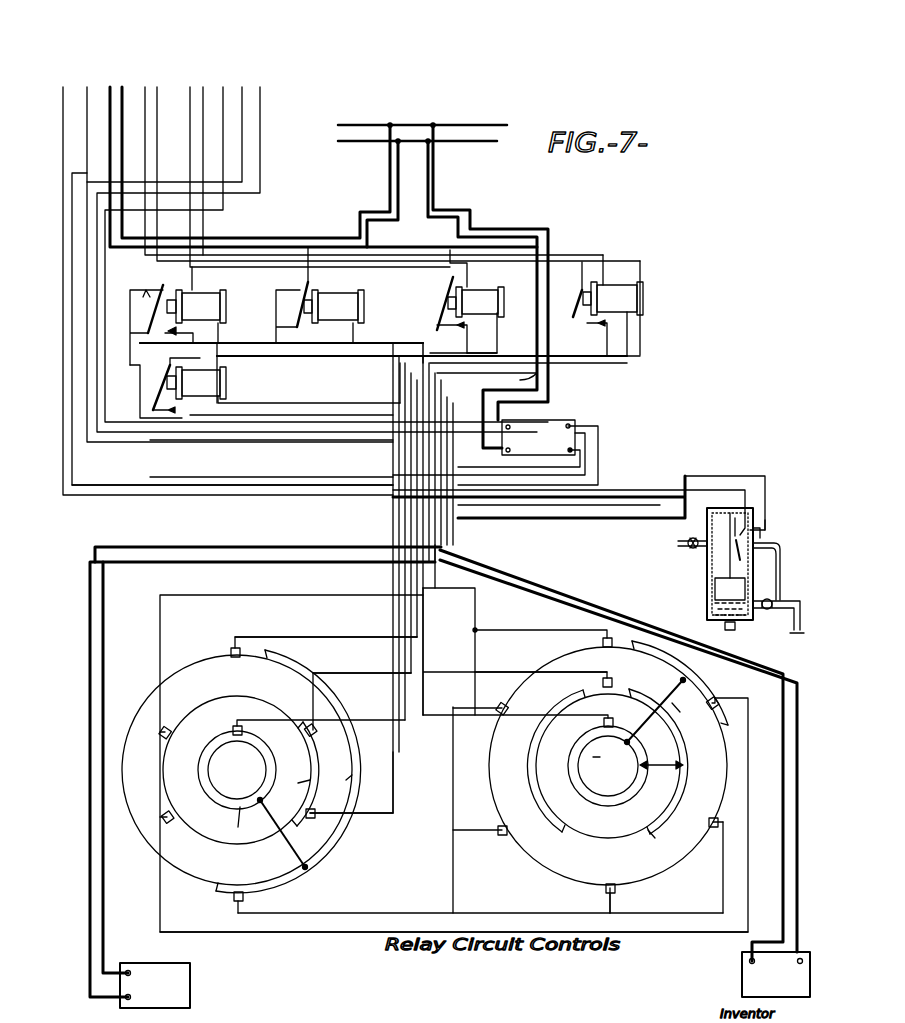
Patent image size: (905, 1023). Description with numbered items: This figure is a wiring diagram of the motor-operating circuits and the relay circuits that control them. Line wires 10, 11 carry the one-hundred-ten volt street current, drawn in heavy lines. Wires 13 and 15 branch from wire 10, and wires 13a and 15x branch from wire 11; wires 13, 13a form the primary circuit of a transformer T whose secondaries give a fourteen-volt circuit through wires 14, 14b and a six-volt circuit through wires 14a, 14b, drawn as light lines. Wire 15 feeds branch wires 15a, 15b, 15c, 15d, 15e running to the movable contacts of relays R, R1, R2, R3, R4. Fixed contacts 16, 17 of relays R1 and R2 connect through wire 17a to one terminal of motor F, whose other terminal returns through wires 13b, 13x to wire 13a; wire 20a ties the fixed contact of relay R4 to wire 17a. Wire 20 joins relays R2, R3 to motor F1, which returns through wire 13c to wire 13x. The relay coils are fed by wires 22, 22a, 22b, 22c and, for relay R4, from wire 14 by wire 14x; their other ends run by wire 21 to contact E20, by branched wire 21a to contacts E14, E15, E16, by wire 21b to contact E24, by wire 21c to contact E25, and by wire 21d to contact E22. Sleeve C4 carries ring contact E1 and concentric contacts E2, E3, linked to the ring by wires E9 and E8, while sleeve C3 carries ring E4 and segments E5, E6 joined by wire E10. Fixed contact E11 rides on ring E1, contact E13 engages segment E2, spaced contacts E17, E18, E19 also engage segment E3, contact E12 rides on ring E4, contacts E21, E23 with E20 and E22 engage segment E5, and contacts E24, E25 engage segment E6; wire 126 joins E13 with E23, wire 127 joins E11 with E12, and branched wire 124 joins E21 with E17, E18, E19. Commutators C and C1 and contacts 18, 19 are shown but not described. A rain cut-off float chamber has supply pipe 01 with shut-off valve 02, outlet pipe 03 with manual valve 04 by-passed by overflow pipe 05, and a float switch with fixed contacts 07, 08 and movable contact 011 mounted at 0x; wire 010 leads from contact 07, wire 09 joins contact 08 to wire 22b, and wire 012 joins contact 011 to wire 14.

The line wire 10 is at (372, 120).
The line wire 11 is at (480, 142).
The wire 13 is at (432, 178).
The wire 13a is at (436, 196).
The wire 13b is at (608, 570).
The wire 13c is at (166, 546).
The wire 13x is at (548, 388).
The wire 14 is at (62, 127).
The wire 14a is at (80, 90).
The wire 14b is at (390, 502).
The wire 14x is at (350, 415).
The wire 15 is at (110, 90).
The branch wire 15a is at (174, 316).
The branch wire 15b is at (302, 285).
The branch wire 15c is at (445, 280).
The branch wire 15d is at (582, 272).
The branch wire 15e is at (130, 328).
The wire 15x is at (122, 88).
The fixed contact 16 is at (184, 333).
The fixed contact 17 is at (334, 362).
The wire 17a is at (785, 900).
The contact 18 is at (457, 330).
The contact 19 is at (605, 347).
The wire 20 is at (430, 420).
The wire 20a is at (140, 400).
The wire 21 is at (254, 362).
The wire 21a is at (724, 898).
The wire 21b is at (495, 352).
The wire 21c is at (642, 350).
The wire 21d is at (393, 748).
The wire 22 is at (190, 118).
The wire 22a is at (215, 87).
The wire 22b is at (148, 88).
The wire 22c is at (190, 86).
The wire 09 is at (242, 88).
The wire 010 is at (262, 118).
The movable contact 011 is at (728, 525).
The wire 012 is at (262, 92).
The supply pipe 01 is at (678, 548).
The manual shut off valve 02 is at (700, 565).
The outlet pipe 03 is at (793, 642).
The manual valve 04 is at (770, 612).
The overflow pipe 05 is at (782, 575).
The fixed contact 07 is at (765, 498).
The fixed contact 08 is at (762, 534).
The mounting 0x is at (715, 580).
The relay R is at (196, 306).
The relay R1 is at (334, 306).
The relay R2 is at (476, 302).
The relay R3 is at (613, 298).
The relay R4 is at (196, 383).
The transformer T is at (575, 425).
The commutator C is at (237, 770).
The commutator C1 is at (608, 766).
The sleeve C3 is at (185, 700).
The sleeve C4 is at (548, 858).
The contact ring E1 is at (603, 754).
The contact E2 is at (659, 836).
The contact E3 is at (672, 672).
The ring-like contact E4 is at (243, 825).
The segmental contact E5 is at (296, 774).
The segmental contact E6 is at (358, 774).
The wire E8 is at (684, 712).
The wire E9 is at (662, 768).
The wire E10 is at (292, 855).
The fixed contact E11 is at (531, 717).
The fixed contact E12 is at (230, 733).
The fixed contact E13 is at (558, 677).
The fixed contact E14 is at (556, 637).
The fixed contact E15 is at (491, 815).
The fixed contact E16 is at (710, 823).
The fixed contact E17 is at (508, 700).
The fixed contact E18 is at (615, 892).
The fixed contact E19 is at (714, 695).
The fixed contact E20 is at (160, 738).
The fixed contact E21 is at (170, 815).
The fixed contact E22 is at (315, 818).
The fixed contact E23 is at (357, 717).
The fixed contact E24 is at (230, 647).
The fixed contact E25 is at (235, 898).
The motor F is at (776, 974).
The motor F1 is at (155, 985).
The wire 124 is at (358, 940).
The wire 126 is at (488, 671).
The wire 127 is at (357, 715).